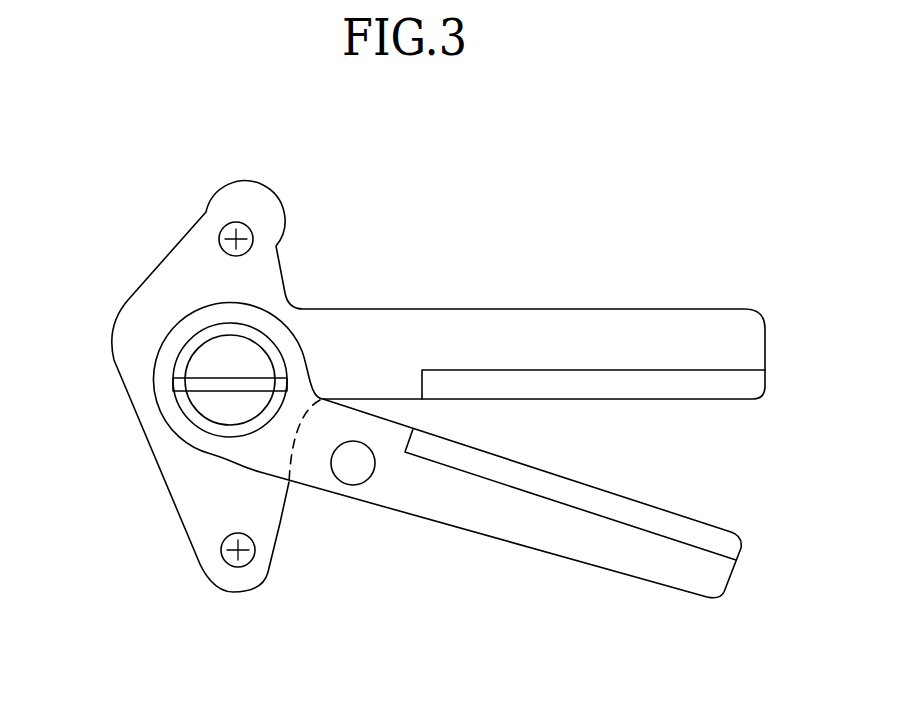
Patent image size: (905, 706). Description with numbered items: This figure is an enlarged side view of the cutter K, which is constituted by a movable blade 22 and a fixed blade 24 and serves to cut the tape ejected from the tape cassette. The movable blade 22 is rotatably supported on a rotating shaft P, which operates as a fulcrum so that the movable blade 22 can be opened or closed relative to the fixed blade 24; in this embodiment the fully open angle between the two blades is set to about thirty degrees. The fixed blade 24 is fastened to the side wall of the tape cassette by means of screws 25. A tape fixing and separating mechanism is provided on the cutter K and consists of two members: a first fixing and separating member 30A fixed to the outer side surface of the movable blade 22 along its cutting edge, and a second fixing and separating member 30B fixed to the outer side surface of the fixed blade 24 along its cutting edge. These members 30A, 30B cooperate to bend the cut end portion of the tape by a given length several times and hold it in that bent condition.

The movable blade 22 is at (502, 528).
The fixed blade 24 is at (535, 333).
The screws 25 is at (252, 230).
The first fixing and separating member 30A is at (695, 538).
The second fixing and separating member 30B is at (683, 383).
The rotating shaft P is at (208, 407).
The cutter K is at (732, 462).